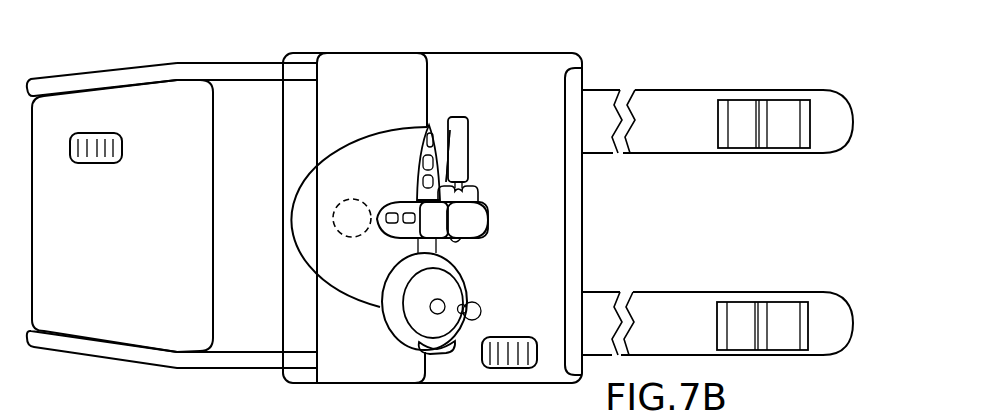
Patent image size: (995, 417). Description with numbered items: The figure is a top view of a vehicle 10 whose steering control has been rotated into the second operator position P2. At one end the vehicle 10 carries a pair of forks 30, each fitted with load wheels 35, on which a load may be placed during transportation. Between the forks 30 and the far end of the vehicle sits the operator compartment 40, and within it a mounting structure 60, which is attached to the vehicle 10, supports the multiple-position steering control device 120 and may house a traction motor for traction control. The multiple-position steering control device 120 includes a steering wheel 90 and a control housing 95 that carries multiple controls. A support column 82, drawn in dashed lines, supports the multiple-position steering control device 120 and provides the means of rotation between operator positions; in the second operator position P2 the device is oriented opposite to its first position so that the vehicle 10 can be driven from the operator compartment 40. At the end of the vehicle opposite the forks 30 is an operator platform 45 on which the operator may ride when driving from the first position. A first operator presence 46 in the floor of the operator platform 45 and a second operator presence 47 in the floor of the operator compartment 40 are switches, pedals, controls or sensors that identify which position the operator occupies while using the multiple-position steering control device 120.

The vehicle 10 is at (742, 58).
The forks 30 is at (686, 91).
The load wheels 35 is at (787, 141).
The operator compartment 40 is at (505, 91).
The operator platform 45 is at (107, 111).
The first operator presence 46 is at (94, 165).
The second operator presence 47 is at (510, 336).
The mounting structure 60 is at (366, 386).
The support column 82 is at (352, 238).
The steering wheel 90 is at (472, 277).
The control housing 95 is at (297, 183).
The multiple-position steering control device 120 is at (387, 127).
The second operator position P2 is at (489, 185).